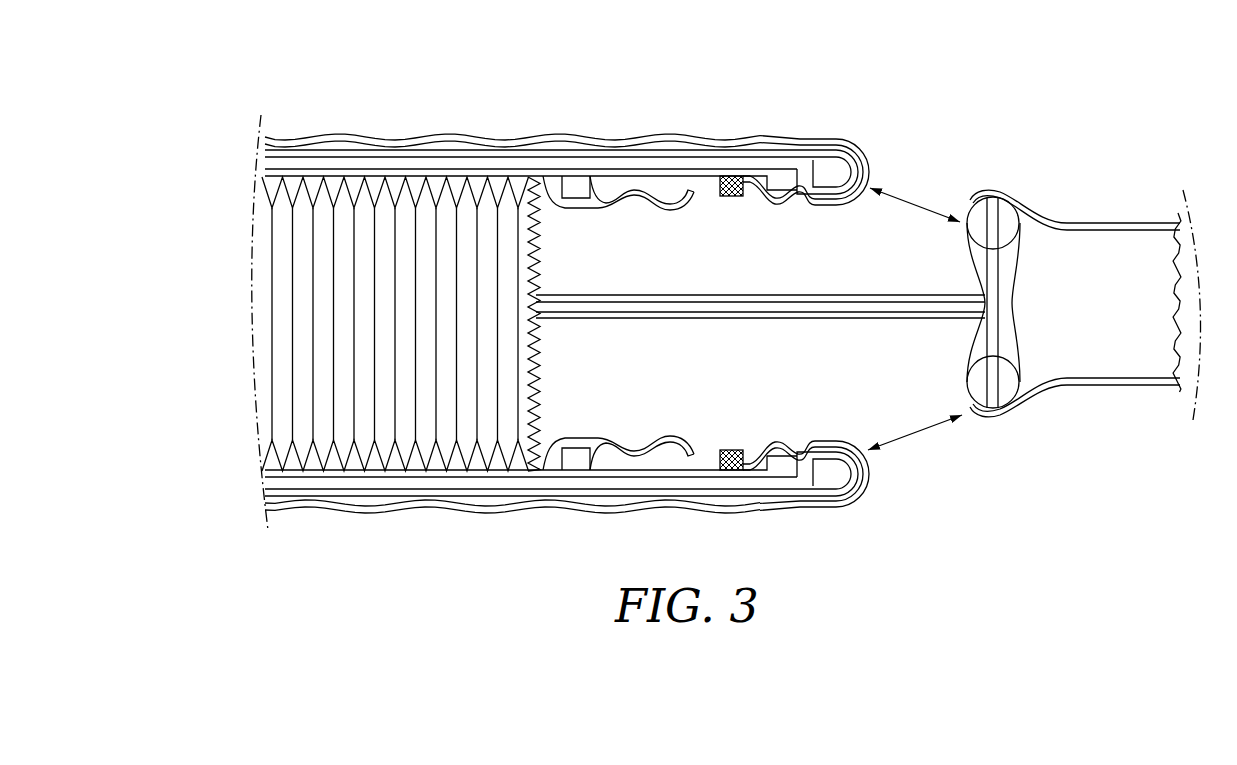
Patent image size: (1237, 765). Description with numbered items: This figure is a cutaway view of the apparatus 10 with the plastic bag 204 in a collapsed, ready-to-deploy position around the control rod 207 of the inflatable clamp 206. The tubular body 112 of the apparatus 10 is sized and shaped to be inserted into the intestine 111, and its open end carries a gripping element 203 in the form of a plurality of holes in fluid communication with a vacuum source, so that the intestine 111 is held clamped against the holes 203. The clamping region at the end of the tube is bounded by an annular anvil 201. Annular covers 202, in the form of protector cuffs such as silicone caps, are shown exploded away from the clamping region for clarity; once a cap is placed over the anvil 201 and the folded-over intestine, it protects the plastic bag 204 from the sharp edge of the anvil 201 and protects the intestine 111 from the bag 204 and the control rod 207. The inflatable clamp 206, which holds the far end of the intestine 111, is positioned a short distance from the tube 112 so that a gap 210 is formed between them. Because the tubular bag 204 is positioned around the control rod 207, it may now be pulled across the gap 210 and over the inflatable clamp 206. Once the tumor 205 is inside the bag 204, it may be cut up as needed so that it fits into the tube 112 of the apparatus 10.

The apparatus 10 is at (640, 87).
The intestine 111 is at (481, 136).
The tubular body 112 is at (288, 180).
The anvil 201 is at (733, 197).
The annular cover 202 is at (692, 200).
The gripping element 203 is at (758, 168).
The plastic bag 204 is at (537, 350).
The tumor 205 is at (1180, 213).
The inflatable clamp 206 is at (1020, 300).
The control rod 207 is at (803, 318).
The gap 210 is at (910, 200).